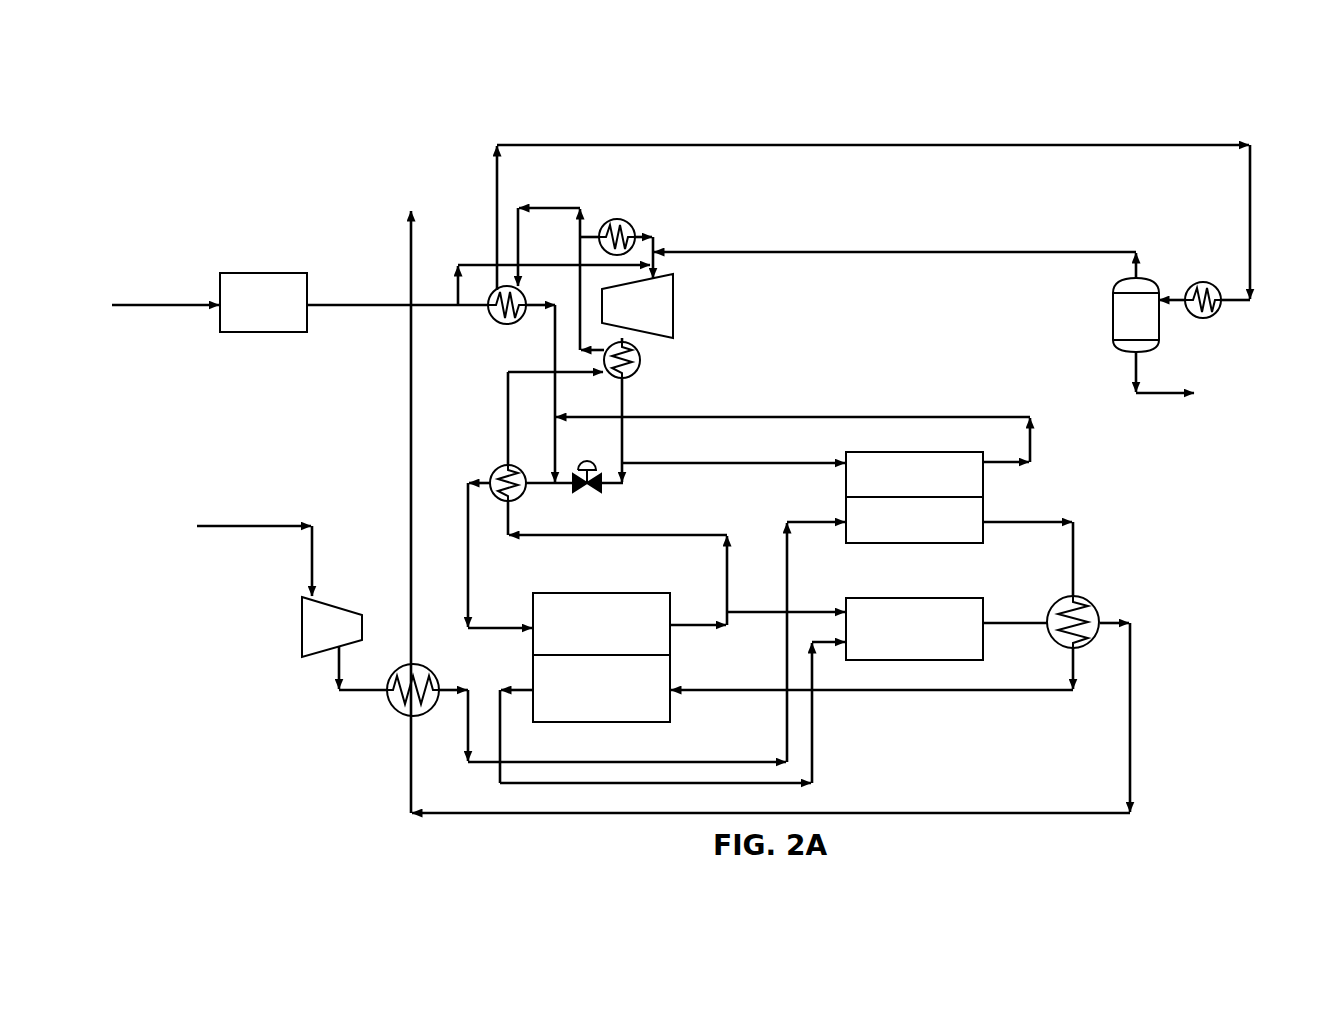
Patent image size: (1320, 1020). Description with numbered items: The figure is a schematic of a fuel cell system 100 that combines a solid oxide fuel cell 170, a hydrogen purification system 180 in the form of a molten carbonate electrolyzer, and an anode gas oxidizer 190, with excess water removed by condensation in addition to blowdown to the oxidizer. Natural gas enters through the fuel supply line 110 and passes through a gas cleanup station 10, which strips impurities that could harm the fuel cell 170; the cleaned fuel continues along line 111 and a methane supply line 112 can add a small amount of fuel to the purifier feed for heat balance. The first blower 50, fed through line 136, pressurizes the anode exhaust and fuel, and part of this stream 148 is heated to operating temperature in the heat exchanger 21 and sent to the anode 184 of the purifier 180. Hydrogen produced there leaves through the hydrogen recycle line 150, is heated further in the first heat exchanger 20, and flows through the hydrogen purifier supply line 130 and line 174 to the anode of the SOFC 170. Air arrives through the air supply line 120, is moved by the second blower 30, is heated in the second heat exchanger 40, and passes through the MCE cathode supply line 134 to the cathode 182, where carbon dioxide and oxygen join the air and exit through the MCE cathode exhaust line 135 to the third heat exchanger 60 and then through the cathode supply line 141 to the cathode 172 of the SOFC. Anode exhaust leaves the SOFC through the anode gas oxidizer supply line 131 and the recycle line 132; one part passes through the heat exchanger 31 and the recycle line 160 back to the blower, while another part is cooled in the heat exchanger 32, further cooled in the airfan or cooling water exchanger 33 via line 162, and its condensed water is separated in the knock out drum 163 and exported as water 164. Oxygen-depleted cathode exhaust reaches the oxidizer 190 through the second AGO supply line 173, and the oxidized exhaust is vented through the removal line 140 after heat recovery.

The fuel cell system 100 is at (776, 133).
The gas cleanup station 10 is at (259, 333).
The fuel supply line 110 is at (148, 309).
The cleaned fuel line 111 is at (475, 306).
The methane supply line 112 is at (470, 265).
The heat exchanger 31 is at (504, 324).
The heat exchanger 32 is at (622, 220).
The airfan or cooling water exchanger 33 is at (1202, 282).
The compressor inlet line 136 is at (657, 242).
The first blower 50 is at (676, 306).
The heat exchanger 21 is at (640, 365).
The first heat exchanger 20 is at (498, 472).
The recycle line 160 is at (666, 145).
The separator overhead line 162 is at (800, 252).
The knock out drum 163 is at (1113, 310).
The water removed stream 164 is at (1165, 393).
The hydrogen recycle line 150 is at (788, 417).
The MCE feed stream 148 is at (790, 462).
The hydrogen purifier supply line 130 is at (470, 594).
The anode 174 is at (532, 618).
The fuel cell 170 is at (565, 635).
The cathode 172 is at (533, 666).
The anode gas oxidizer supply line 131 is at (704, 622).
The recycle line 132 is at (757, 614).
The MCE cathode supply line 134 is at (776, 566).
The hydrogen purification system 180 is at (918, 481).
The anode 184 is at (846, 485).
The cathode 182 is at (984, 510).
The MCE cathode exhaust line 135 is at (1078, 537).
The third heat exchanger 60 is at (1096, 601).
The anode gas oxidizer 190 is at (985, 655).
The cathode supply line 141 is at (930, 692).
The second AGO supply line 173 is at (812, 762).
The removal line 140 is at (568, 815).
The second heat exchanger 40 is at (394, 708).
The second blower 30 is at (300, 640).
The air supply line 120 is at (240, 530).